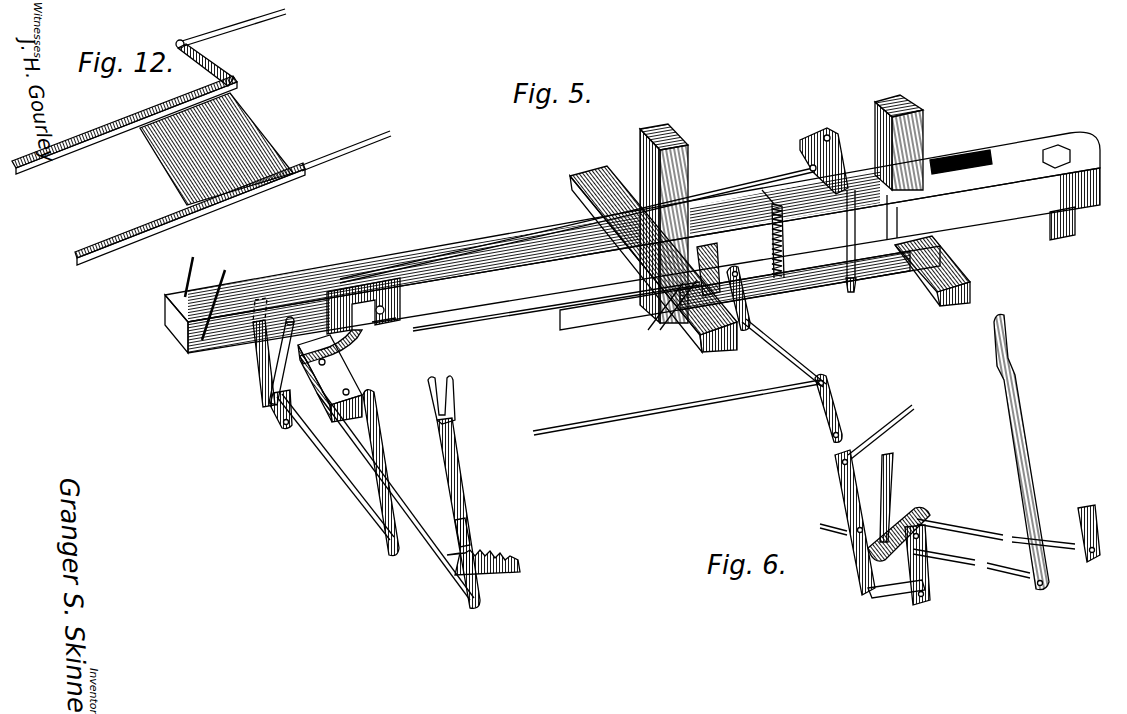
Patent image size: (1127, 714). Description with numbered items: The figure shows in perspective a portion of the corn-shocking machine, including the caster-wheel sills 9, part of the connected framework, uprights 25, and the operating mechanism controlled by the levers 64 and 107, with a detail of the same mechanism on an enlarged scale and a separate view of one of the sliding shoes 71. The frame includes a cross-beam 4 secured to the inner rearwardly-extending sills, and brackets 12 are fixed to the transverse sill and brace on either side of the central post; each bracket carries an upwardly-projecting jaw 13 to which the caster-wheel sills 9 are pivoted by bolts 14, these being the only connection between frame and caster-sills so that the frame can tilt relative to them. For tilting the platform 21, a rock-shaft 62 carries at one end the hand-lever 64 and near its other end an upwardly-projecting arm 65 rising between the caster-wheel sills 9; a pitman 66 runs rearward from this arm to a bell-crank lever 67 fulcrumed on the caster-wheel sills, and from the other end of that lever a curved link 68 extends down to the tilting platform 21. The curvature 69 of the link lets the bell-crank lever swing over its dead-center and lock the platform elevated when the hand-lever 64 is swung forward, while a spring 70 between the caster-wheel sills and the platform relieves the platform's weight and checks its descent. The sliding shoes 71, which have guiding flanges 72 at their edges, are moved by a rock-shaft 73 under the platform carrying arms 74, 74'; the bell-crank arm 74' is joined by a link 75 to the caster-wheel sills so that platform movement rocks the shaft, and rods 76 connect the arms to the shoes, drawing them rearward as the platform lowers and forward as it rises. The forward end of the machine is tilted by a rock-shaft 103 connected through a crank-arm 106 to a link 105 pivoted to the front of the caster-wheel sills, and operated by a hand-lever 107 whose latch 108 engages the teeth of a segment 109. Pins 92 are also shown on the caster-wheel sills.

In FIG. 5, the cross-beam 4 is at (340, 384).
In FIG. 5, the caster-wheel sills 9 is at (396, 258).
In FIG. 5, the brackets 12 is at (335, 347).
In FIG. 5, the upwardly-projecting jaw 13 is at (390, 308).
In FIG. 5, the bolts 14 is at (385, 326).
In FIG. 5, the tilting platform 21 is at (770, 259).
In FIG. 5, the post 25 is at (689, 164).
In FIG. 5, the rock-shaft 62 is at (350, 466).
In FIG. 6, the rock-shaft 62 is at (971, 568).
In FIG. 5, the hand-lever 64 is at (378, 465).
In FIG. 6, the hand-lever 64 is at (1030, 480).
In FIG. 5, the upwardly-projecting arm 65 is at (256, 362).
In FIG. 5, the pitman 66 is at (730, 190).
In FIG. 6, the pitman 66 is at (898, 418).
In FIG. 5, the bell-crank lever 67 is at (812, 160).
In FIG. 5, the curved link 68 is at (852, 264).
In FIG. 5, the curvature point 69 is at (857, 176).
In FIG. 5, the spring 70 is at (790, 241).
In FIG. 12, the sliding shoes 71 is at (216, 149).
In FIG. 12, the flanges 72 is at (157, 220).
In FIG. 5, the rock-shaft 73 is at (784, 353).
In FIG. 5, the upwardly-extending arms 74 is at (793, 354).
In FIG. 5, the bell-crank arm 74' is at (723, 269).
In FIG. 5, the link 75 is at (670, 318).
In FIG. 12, the rods 76 is at (253, 15).
In FIG. 5, the rods 76 is at (600, 300).
In FIG. 5, the pin 92 is at (200, 271).
In FIG. 5, the rock-shaft 103 is at (402, 507).
In FIG. 6, the rock-shaft 103 is at (965, 526).
In FIG. 5, the link 105 is at (288, 361).
In FIG. 6, the link 105 is at (893, 498).
In FIG. 5, the crank-arm 106 is at (278, 401).
In FIG. 6, the crank-arm 106 is at (921, 510).
In FIG. 5, the hand-lever 107 is at (462, 502).
In FIG. 6, the hand-lever 107 is at (1074, 533).
In FIG. 5, the latch 108 is at (469, 540).
In FIG. 5, the segment 109 is at (503, 562).